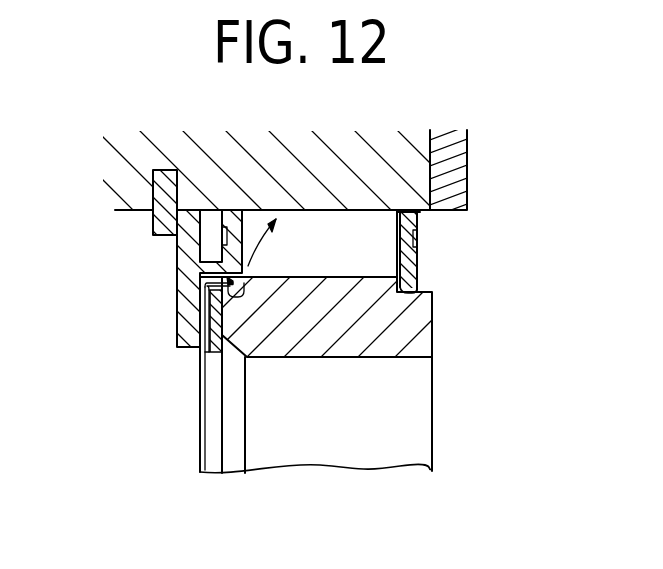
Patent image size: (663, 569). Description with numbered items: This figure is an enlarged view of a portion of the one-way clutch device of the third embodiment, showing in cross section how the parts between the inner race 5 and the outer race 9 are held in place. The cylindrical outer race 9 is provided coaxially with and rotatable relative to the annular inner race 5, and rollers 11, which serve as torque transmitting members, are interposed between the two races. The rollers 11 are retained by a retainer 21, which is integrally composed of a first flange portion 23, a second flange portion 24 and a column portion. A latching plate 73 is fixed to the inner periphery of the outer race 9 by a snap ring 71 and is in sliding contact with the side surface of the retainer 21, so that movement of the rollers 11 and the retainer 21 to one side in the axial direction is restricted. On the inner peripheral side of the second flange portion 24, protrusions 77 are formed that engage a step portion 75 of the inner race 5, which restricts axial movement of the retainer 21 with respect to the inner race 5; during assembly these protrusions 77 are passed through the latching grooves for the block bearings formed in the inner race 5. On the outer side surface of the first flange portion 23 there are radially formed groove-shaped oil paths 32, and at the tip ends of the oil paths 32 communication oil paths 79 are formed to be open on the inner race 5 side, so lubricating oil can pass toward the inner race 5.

The outer race 9 is at (397, 163).
The snap ring 71 is at (158, 219).
The latching plate 73 is at (183, 258).
The roller 11 is at (370, 235).
The second flange portion 24 is at (407, 258).
The protrusion 77 is at (420, 284).
The step portion 75 is at (415, 297).
The inner race 5 is at (433, 338).
The communication oil path 79 is at (198, 278).
The oil path 32 is at (200, 308).
The first flange portion 23 is at (183, 347).
The retainer 21 is at (194, 438).